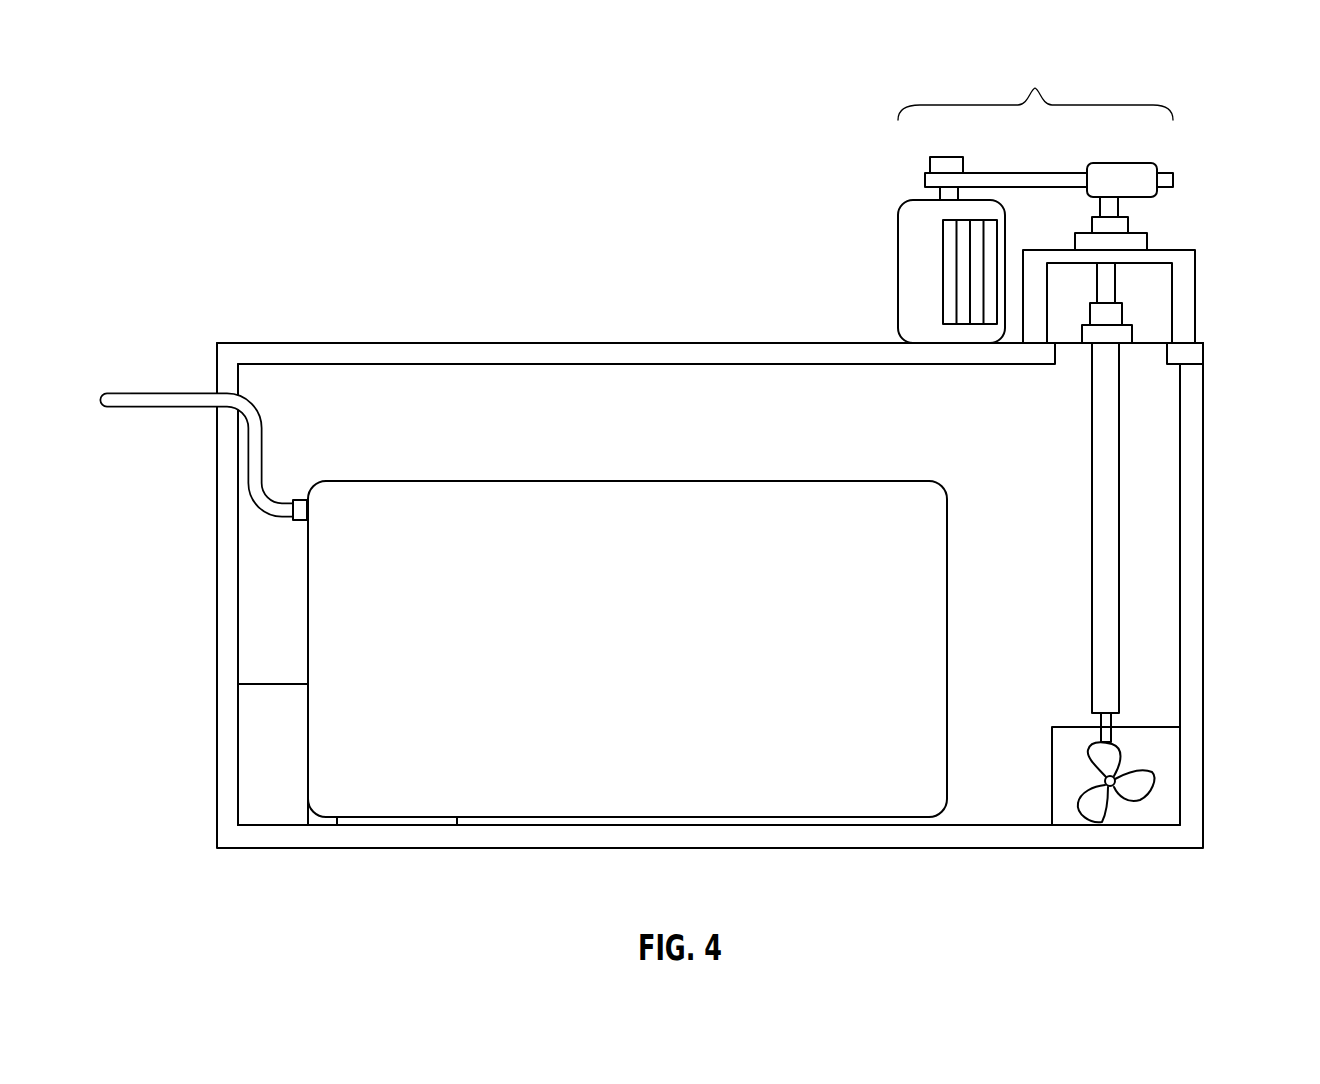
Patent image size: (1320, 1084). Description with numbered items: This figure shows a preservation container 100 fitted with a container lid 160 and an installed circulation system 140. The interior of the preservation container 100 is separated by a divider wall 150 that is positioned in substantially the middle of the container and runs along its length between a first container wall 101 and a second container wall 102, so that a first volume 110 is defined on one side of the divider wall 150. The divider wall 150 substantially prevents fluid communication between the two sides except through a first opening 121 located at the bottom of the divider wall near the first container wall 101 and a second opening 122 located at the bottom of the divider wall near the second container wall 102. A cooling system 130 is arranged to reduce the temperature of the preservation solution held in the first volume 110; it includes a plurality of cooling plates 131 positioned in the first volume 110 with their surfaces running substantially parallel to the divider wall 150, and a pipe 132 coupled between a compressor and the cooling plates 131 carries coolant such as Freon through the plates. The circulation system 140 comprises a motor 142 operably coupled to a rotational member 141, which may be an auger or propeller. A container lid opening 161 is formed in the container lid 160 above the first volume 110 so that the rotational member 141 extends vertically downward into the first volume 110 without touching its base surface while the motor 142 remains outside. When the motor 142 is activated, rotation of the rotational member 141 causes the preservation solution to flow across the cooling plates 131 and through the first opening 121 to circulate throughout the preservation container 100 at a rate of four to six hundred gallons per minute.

The preservation container 100 is at (461, 288).
The first container wall 101 is at (238, 708).
The second container wall 102 is at (1203, 798).
The first volume 110 is at (690, 390).
The first opening 121 is at (1137, 815).
The second opening 122 is at (262, 767).
The cooling system 130 is at (170, 410).
The cooling plates 131 is at (500, 797).
The pipe 132 is at (178, 392).
The circulation system 140 is at (1035, 88).
The rotational member 141 is at (1140, 787).
The motor 142 is at (898, 245).
The divider wall 150 is at (258, 682).
The container lid 160 is at (282, 342).
The container lid opening 161 is at (1183, 355).